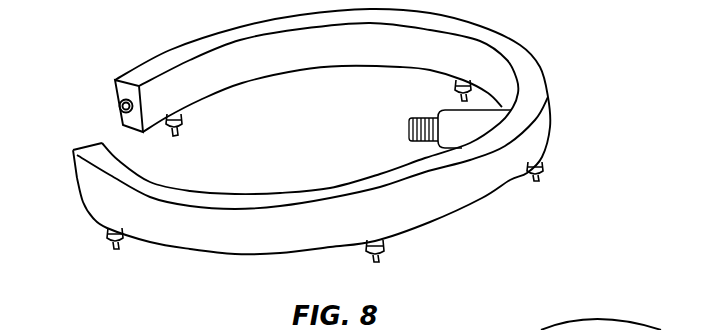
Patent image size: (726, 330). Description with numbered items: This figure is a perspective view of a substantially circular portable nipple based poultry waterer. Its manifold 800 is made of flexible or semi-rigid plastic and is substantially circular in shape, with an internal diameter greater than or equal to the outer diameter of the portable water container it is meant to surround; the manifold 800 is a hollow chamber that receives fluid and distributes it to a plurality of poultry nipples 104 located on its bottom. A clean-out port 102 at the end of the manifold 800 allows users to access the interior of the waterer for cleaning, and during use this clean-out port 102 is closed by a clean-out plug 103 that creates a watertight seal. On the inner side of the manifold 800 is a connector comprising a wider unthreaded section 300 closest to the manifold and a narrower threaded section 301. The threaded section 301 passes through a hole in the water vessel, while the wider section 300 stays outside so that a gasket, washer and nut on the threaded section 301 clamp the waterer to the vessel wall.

The manifold 800 is at (335, 131).
The clean-out port 102 is at (117, 97).
The clean-out plug 103 is at (120, 104).
The poultry nipple 104 is at (181, 133).
The section (unthreaded portion) of connector 300 is at (452, 110).
The threaded section of connector 301 is at (417, 141).